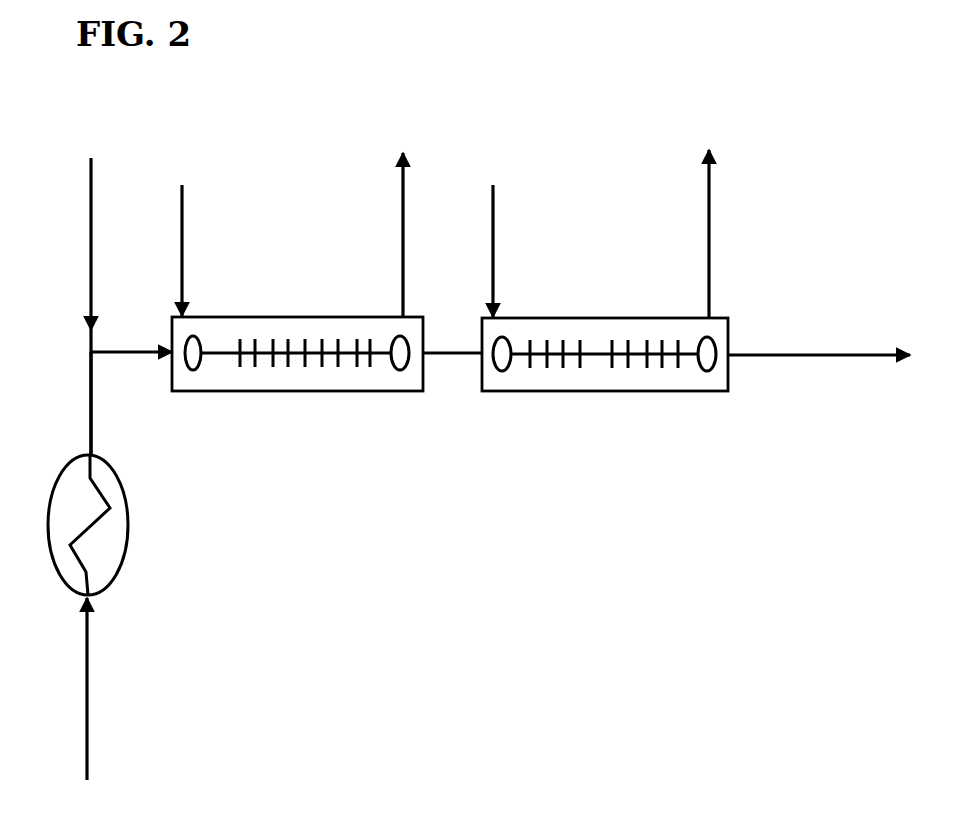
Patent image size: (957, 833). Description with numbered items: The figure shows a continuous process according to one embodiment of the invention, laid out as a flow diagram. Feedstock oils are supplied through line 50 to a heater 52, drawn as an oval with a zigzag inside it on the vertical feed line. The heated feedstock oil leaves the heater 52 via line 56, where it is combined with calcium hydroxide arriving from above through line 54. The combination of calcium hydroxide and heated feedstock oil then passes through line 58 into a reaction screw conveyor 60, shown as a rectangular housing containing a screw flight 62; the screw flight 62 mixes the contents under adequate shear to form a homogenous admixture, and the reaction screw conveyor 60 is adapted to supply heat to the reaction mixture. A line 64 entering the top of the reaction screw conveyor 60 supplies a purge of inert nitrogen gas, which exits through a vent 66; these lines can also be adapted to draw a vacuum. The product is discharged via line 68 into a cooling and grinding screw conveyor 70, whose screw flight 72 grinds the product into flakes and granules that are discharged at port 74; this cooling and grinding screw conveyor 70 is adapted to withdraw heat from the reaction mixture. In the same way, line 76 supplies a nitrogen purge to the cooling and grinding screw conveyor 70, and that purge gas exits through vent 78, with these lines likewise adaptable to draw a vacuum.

The line 50 is at (88, 727).
The heater 52 is at (115, 538).
The line 54 is at (90, 254).
The line 56 is at (86, 413).
The line 58 is at (128, 358).
The reaction screw conveyor 60 is at (303, 395).
The screw flight 62 is at (362, 355).
The line 64 is at (197, 212).
The vent 66 is at (395, 212).
The line 68 is at (442, 315).
The cooling and grinding screw conveyor 70 is at (617, 393).
The screw flight 72 is at (660, 353).
The port 74 is at (800, 352).
The line 76 is at (500, 218).
The vent 78 is at (718, 233).